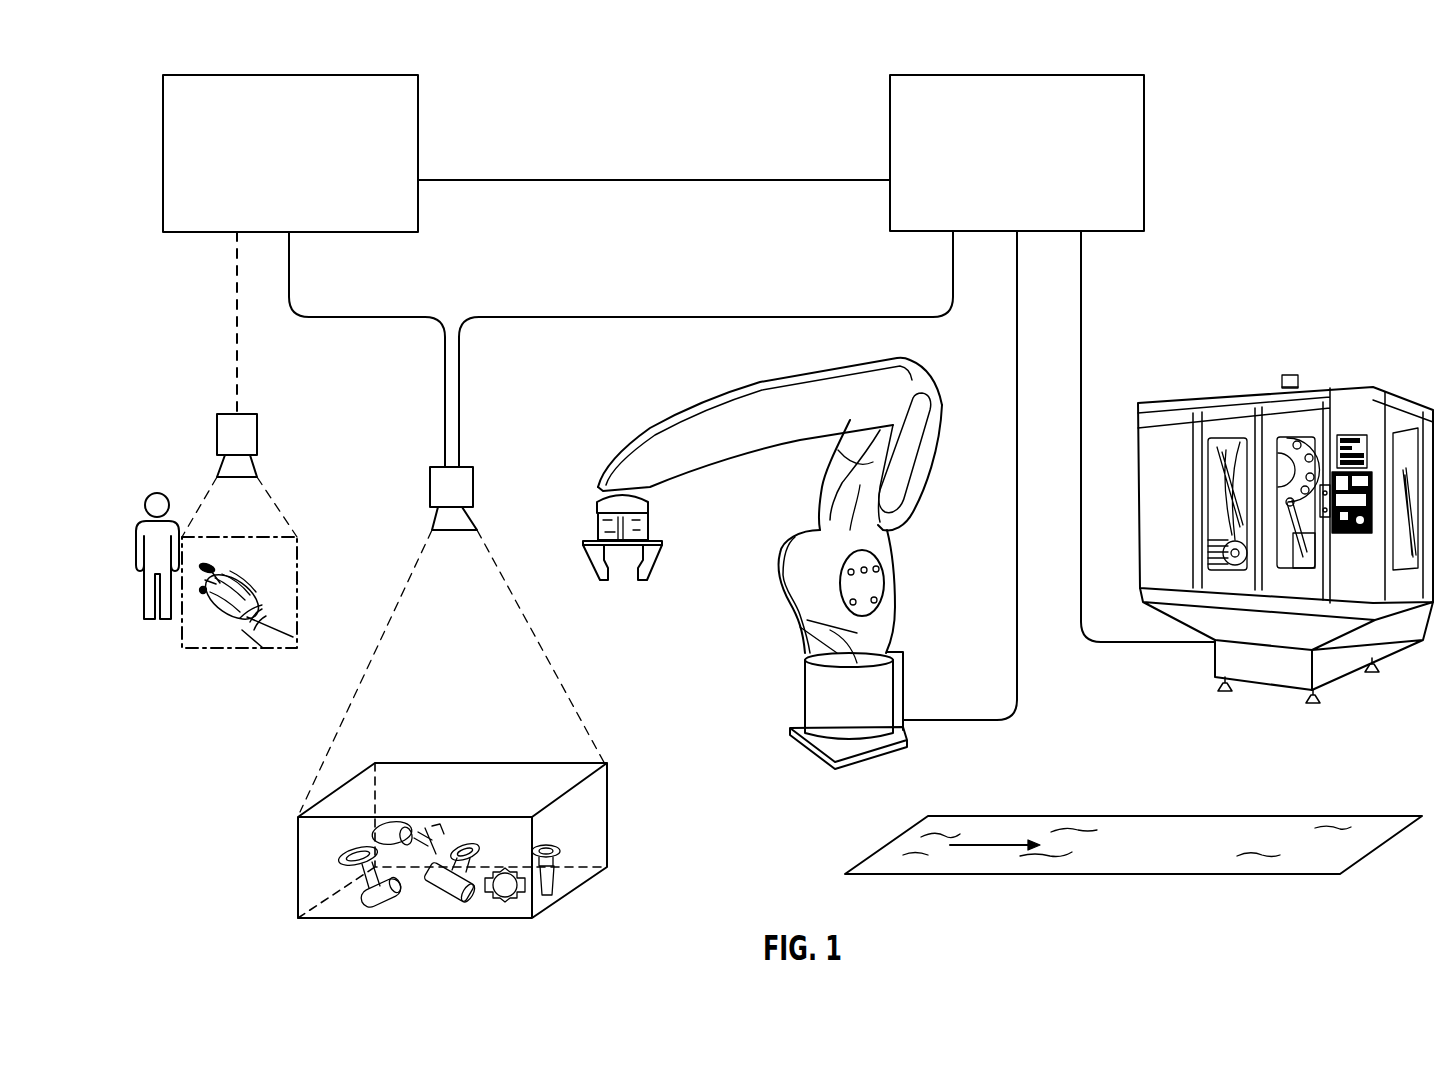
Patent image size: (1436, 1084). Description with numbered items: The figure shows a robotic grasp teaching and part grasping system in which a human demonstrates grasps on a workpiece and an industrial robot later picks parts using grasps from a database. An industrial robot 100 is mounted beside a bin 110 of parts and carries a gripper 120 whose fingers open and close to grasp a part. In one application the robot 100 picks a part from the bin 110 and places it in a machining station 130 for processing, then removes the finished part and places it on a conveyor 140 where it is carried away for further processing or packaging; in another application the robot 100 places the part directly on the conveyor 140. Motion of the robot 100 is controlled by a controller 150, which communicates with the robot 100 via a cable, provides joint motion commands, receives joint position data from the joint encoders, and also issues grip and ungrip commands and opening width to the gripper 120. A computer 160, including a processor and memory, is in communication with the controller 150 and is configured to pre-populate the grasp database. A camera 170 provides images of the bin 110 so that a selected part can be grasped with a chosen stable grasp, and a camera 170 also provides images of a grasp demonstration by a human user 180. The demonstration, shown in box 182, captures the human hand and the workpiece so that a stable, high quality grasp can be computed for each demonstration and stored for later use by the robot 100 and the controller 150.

The industrial robot 100 is at (793, 681).
The bin 110 is at (573, 885).
The gripper 120 is at (667, 550).
The machining station 130 is at (1338, 364).
The conveyor 140 is at (983, 815).
The controller 150 is at (1107, 74).
The computer 160 is at (215, 74).
The camera 170 is at (258, 435).
The human user 180 is at (165, 621).
The box illustrating grasp demonstration 182 is at (213, 648).